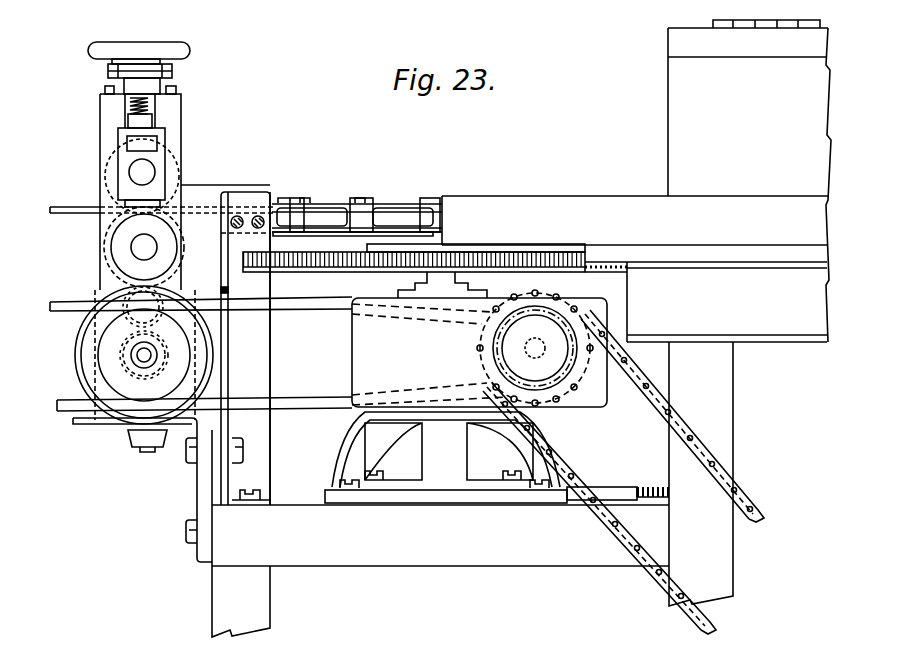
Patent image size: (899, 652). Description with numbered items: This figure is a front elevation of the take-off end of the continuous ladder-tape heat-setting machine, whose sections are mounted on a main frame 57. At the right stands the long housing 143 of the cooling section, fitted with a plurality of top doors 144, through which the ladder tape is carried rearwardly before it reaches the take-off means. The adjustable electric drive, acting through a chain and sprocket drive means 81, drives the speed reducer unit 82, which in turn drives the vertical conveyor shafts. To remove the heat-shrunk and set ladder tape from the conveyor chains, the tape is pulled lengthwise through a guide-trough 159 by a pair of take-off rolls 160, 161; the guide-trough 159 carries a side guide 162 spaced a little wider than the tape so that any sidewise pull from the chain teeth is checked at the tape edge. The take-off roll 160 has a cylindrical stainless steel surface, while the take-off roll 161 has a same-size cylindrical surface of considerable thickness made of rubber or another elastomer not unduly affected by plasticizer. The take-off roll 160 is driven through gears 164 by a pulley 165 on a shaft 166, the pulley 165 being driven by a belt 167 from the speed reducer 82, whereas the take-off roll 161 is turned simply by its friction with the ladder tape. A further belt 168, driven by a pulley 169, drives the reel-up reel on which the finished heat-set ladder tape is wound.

The main frame 57 is at (482, 570).
The chain and sprocket drive means 81 is at (738, 499).
The speed reducer unit 82 is at (352, 358).
The housing 143 is at (690, 98).
The top doors 144 is at (676, 44).
The guide-trough 159 is at (290, 177).
The take-off roll 160 is at (110, 246).
The take-off roll 161 is at (110, 172).
The side guide 162 is at (312, 198).
The gears 164 is at (160, 400).
The pulley 165 is at (95, 342).
The shaft 166 is at (148, 347).
The belt 167 is at (318, 306).
The belt 168 is at (60, 410).
The pulley 169 is at (125, 378).